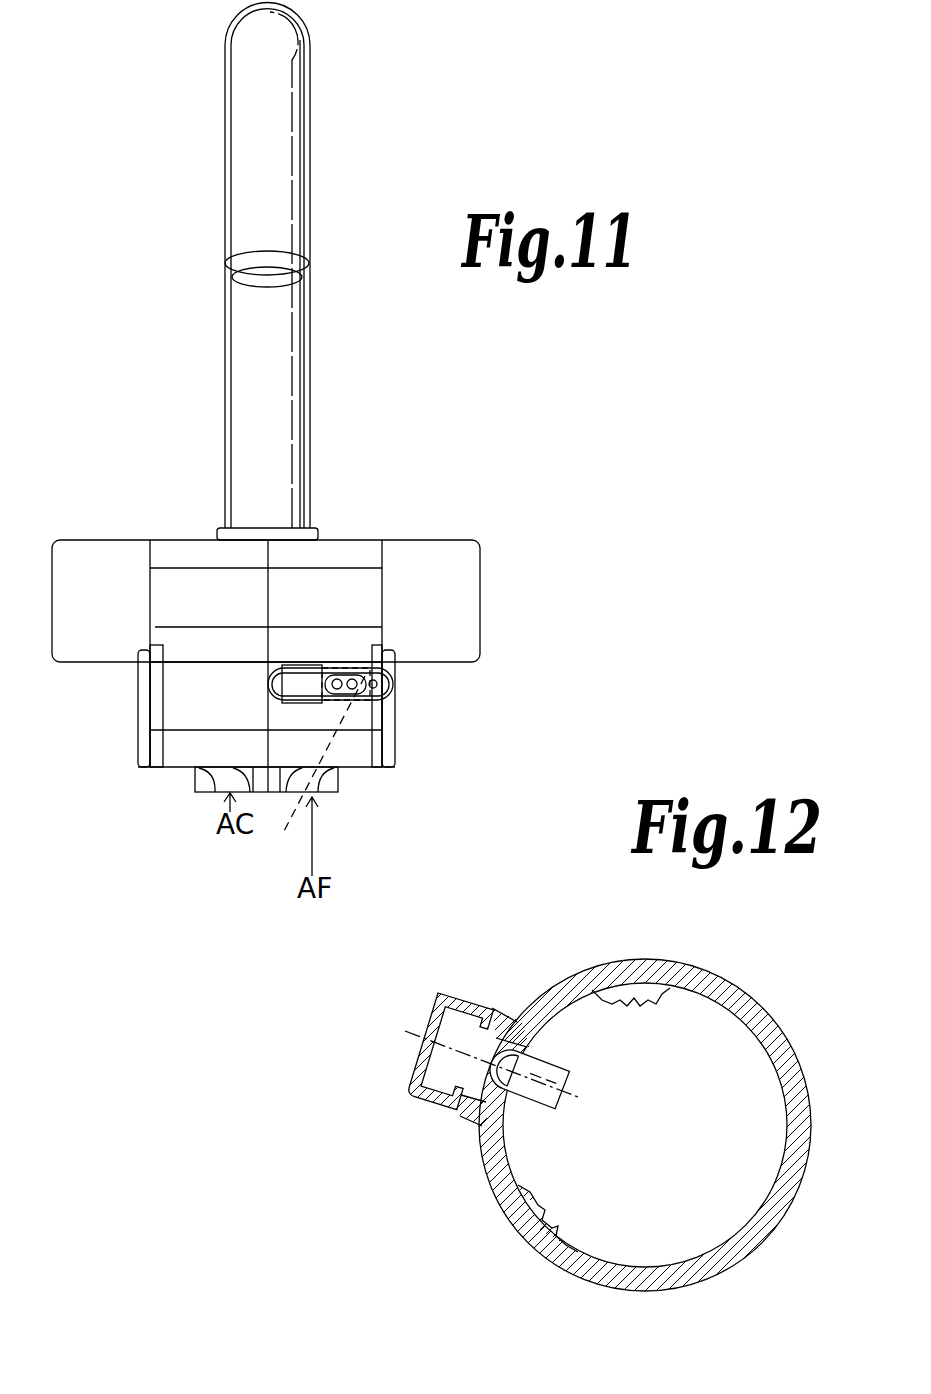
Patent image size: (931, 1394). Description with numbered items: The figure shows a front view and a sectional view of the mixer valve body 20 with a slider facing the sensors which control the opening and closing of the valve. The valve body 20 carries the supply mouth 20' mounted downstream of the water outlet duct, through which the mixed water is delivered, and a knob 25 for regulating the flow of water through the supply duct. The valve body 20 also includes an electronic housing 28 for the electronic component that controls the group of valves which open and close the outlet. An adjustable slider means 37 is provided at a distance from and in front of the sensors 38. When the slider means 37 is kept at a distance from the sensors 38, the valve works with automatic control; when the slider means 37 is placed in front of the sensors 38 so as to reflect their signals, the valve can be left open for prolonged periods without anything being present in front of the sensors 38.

In FIG. 11, the supply mouth 20' is at (308, 272).
In FIG. 11, the knob 25 is at (128, 548).
In FIG. 11, the mixer valve body 20 is at (256, 749).
In FIG. 12, the mixer valve body 20 is at (632, 1140).
In FIG. 11, the adjustable slider means 37 is at (300, 695).
In FIG. 12, the adjustable slider means 37 is at (415, 1058).
In FIG. 11, the sensors 38 is at (363, 700).
In FIG. 12, the sensors 38 is at (522, 1082).
In FIG. 12, the electronic housing 28 is at (677, 1242).